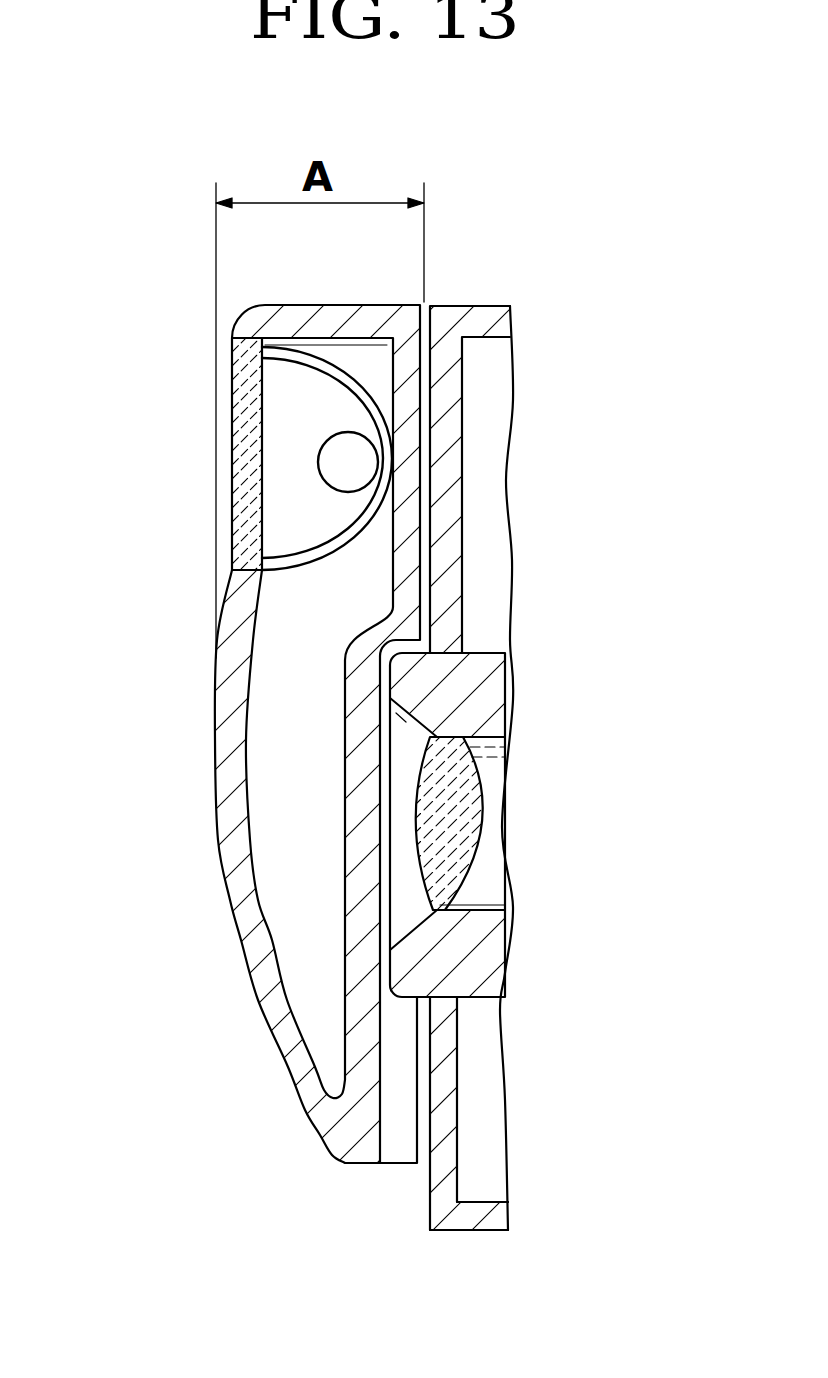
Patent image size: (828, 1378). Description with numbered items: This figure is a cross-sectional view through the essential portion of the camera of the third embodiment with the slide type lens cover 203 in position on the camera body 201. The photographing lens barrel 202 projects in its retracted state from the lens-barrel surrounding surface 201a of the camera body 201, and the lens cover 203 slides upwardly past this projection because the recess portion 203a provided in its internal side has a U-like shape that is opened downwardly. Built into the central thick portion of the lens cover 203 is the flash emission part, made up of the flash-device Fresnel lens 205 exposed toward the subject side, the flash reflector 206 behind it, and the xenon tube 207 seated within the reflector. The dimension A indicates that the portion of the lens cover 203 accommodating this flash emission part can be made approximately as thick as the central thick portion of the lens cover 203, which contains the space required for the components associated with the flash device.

The camera body 201 is at (497, 1220).
The lens-barrel surrounding surface 201a is at (443, 1220).
The photographing lens barrel 202 is at (560, 655).
The lens cover 203 is at (233, 835).
The recess portion 203a is at (370, 1043).
The flash-device Fresnel lens 205 is at (243, 387).
The flash reflector 206 is at (293, 553).
The xenon tube 207 is at (340, 462).